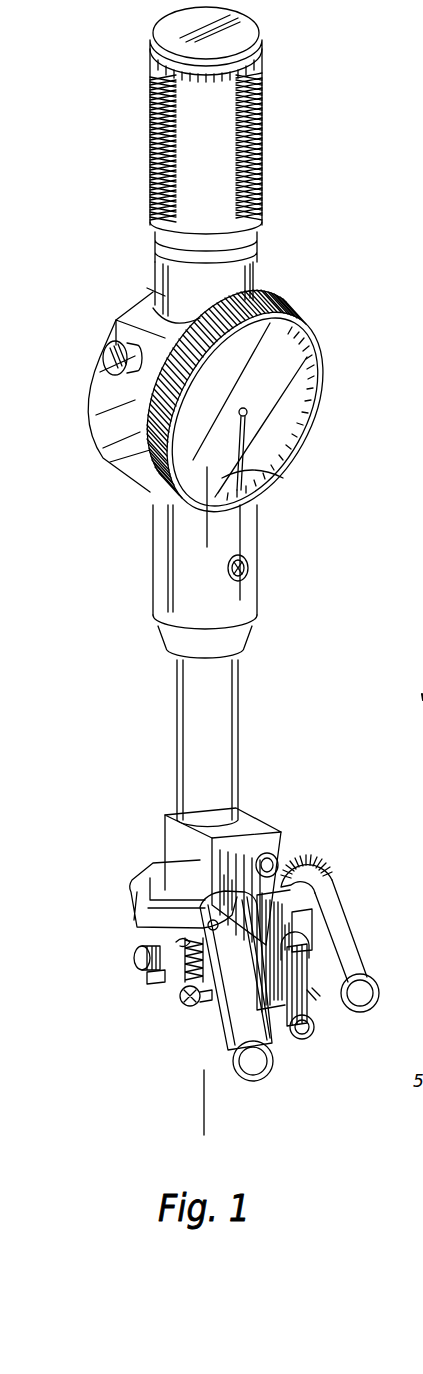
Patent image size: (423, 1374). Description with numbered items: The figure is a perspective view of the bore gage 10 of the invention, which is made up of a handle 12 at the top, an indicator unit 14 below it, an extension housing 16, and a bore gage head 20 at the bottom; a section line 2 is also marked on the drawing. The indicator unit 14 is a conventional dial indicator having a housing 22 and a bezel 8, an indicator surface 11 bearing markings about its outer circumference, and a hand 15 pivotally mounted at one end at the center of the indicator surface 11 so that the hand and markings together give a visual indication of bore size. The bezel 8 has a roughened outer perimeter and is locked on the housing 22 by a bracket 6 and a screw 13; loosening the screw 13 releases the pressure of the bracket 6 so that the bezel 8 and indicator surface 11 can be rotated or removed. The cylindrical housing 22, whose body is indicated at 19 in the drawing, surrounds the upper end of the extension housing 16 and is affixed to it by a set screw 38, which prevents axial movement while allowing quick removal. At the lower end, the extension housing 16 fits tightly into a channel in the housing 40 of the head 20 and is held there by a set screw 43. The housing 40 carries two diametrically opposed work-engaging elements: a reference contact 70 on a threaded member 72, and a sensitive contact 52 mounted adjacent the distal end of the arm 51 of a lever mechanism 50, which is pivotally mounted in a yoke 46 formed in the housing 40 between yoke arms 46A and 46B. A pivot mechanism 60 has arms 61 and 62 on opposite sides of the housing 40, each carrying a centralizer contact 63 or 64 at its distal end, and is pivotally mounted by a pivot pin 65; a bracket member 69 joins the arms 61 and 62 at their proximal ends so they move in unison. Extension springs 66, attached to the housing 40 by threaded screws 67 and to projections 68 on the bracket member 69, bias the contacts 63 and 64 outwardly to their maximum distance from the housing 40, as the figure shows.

The section line 2 is at (205, 479).
The bracket 6 is at (168, 356).
The bezel 8 is at (270, 305).
The bore gage 10 is at (128, 652).
The indicator surface 11 is at (297, 417).
The handle 12 is at (266, 74).
The screw 13 is at (110, 350).
The indicator unit 14 is at (316, 336).
The hand 15 is at (278, 478).
The extension housing 16 is at (241, 680).
The housing 19 is at (92, 393).
The bore gage head 20 is at (125, 991).
The housing 22 is at (153, 560).
The set screw 38 is at (249, 567).
The housing 40 is at (258, 810).
The set screw 43 is at (280, 855).
The yoke 46 is at (303, 892).
The yoke arm 46A is at (277, 1017).
The yoke arm 46B is at (312, 935).
The lever mechanism 50 is at (300, 923).
The arm 51 is at (316, 1002).
The sensitive contact 52 is at (314, 1038).
The pivot mechanism 60 is at (313, 853).
The arm 61 is at (355, 955).
The arm 62 is at (238, 1032).
The centralizer contact 63 is at (378, 988).
The centralizer contact 64 is at (245, 1078).
The pivot pin 65 is at (208, 923).
The extension spring 66 is at (185, 968).
The threaded screw 67 is at (185, 1006).
The projection 68 is at (178, 941).
The bracket member 69 is at (132, 878).
The reference contact 70 is at (132, 957).
The threaded member 72 is at (157, 982).